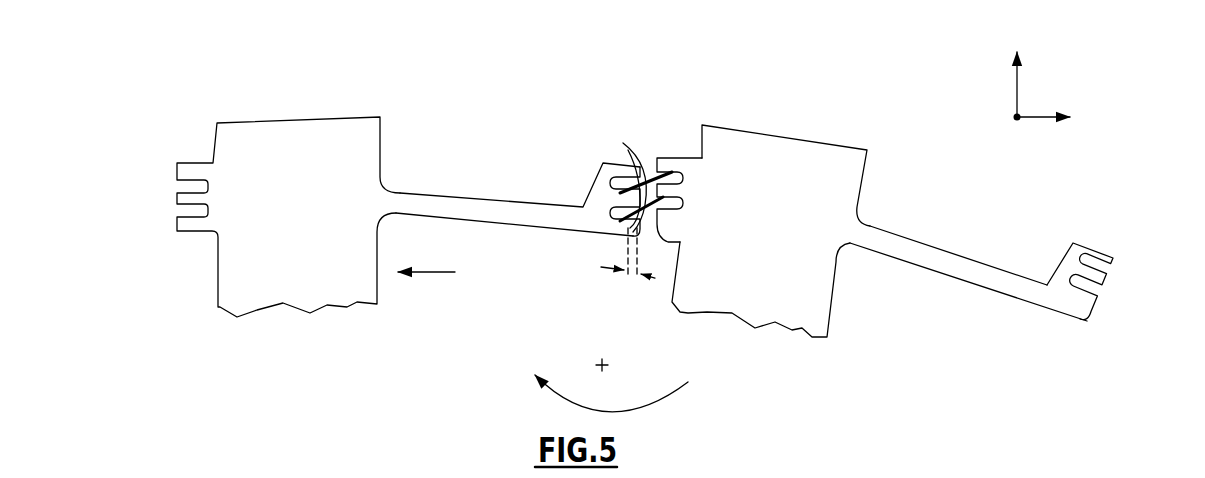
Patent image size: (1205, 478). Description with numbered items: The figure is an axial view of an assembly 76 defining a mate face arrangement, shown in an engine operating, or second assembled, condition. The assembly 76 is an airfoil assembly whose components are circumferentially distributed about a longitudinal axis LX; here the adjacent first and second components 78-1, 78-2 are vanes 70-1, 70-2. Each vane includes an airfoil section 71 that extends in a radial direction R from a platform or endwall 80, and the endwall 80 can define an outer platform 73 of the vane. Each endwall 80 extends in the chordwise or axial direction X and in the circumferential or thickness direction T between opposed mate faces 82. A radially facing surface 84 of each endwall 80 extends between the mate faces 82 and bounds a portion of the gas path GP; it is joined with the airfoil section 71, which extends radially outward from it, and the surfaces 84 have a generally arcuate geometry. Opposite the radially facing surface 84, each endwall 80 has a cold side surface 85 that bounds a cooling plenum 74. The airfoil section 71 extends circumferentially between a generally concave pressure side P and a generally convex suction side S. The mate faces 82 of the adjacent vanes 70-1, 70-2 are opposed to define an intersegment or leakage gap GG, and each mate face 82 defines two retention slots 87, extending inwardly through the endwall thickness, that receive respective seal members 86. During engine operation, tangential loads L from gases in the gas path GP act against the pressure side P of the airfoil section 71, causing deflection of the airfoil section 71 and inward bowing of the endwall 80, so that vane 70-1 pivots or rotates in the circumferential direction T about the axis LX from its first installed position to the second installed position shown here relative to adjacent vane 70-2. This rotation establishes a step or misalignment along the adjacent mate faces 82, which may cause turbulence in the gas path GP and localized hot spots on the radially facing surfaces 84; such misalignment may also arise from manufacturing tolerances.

The assembly 76 is at (224, 68).
The first vane 70-1 is at (224, 195).
The first component 78-1 is at (215, 116).
The second vane 70-2 is at (771, 207).
The second component 78-2 is at (712, 117).
The airfoil section 71 is at (233, 260).
The outer platform 73 is at (741, 230).
The endwall 80 is at (741, 230).
The cold side surface 85 is at (741, 230).
The radially facing surface 84 is at (425, 200).
The mate face 82 is at (632, 241).
The seal member 86 is at (632, 152).
The retention slot 87 is at (675, 203).
The cooling plenum 74 is at (553, 113).
The gas path GP is at (549, 333).
The intersegment gap GG is at (655, 278).
The suction side S is at (218, 300).
The pressure side P is at (380, 288).
The load L is at (441, 275).
The longitudinal axis LX is at (607, 360).
The radial direction R is at (1018, 70).
The circumferential direction T is at (1058, 116).
The axial direction X is at (1015, 118).